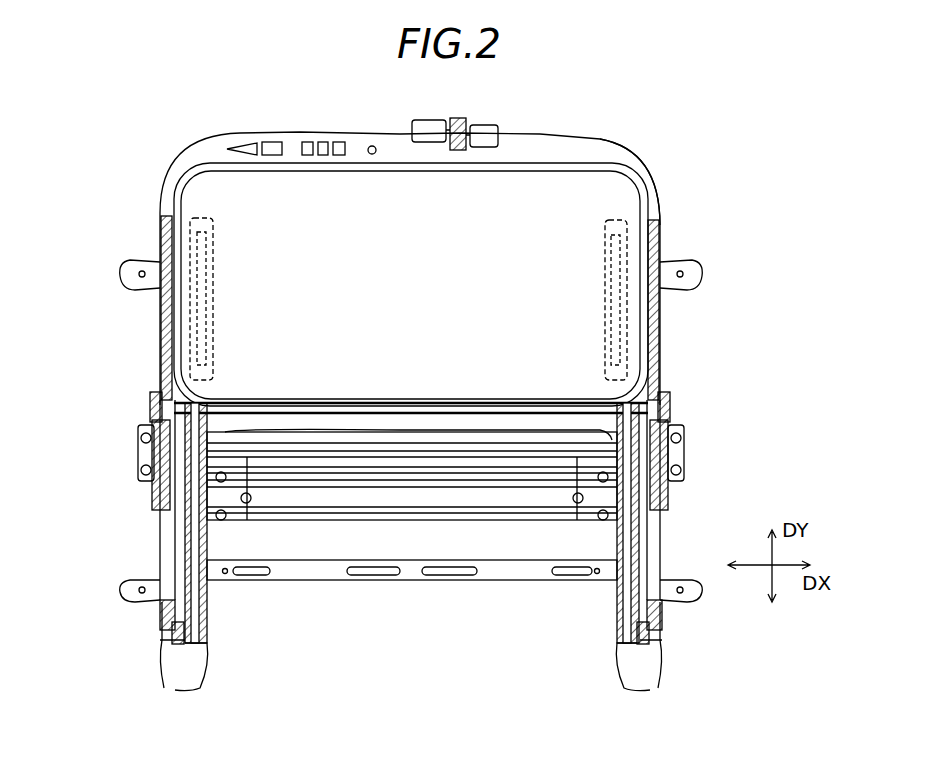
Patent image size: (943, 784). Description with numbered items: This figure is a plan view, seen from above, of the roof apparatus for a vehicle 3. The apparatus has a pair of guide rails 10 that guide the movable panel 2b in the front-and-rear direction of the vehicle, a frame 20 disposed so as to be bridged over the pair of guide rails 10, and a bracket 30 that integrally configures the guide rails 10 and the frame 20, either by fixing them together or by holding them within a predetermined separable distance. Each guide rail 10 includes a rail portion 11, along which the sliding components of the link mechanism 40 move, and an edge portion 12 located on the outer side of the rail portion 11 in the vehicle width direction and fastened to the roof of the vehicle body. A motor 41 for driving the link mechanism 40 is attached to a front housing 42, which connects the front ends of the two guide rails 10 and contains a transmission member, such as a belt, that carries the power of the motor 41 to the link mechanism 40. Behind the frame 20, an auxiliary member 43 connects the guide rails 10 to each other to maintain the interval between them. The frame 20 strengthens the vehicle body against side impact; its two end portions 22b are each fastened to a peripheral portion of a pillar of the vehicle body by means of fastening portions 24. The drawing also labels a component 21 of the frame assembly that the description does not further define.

The roof apparatus for a vehicle 3 is at (702, 133).
The movable panel 2b is at (623, 196).
The guide rail 10 is at (140, 714).
The rail portion 11 is at (196, 662).
The edge portion 12 is at (162, 662).
The frame 20 is at (440, 520).
The rear frame body 21 is at (350, 497).
The end portion 22b is at (152, 398).
The fastening portion 24 is at (130, 478).
The bracket 30 is at (155, 520).
The link mechanism 40 is at (218, 272).
The motor 41 is at (478, 124).
The front housing 42 is at (580, 145).
The auxiliary member 43 is at (410, 580).